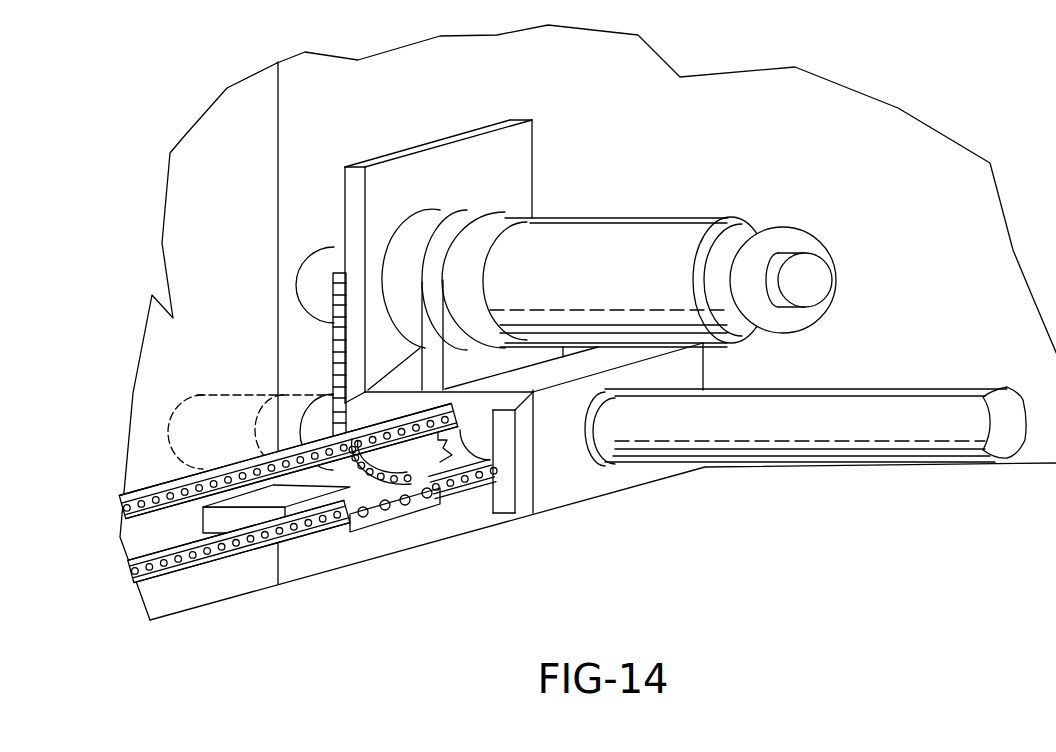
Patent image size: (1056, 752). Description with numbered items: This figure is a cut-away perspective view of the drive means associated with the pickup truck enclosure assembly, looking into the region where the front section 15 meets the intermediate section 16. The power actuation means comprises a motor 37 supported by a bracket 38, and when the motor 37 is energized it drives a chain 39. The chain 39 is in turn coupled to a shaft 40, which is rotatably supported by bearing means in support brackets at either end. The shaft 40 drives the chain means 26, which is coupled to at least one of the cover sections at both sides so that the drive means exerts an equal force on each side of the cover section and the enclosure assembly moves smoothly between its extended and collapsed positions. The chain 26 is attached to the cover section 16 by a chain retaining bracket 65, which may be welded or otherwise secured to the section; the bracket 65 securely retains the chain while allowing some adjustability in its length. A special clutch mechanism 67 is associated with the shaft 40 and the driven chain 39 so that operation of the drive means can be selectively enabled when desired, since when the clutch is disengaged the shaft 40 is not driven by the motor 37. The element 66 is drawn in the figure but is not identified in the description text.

The front section 15 is at (800, 167).
The intermediate section 16 is at (208, 243).
The chain means 26 is at (153, 488).
The motor 37 is at (618, 240).
The bracket 38 is at (424, 146).
The chain 39 is at (343, 272).
The shaft 40 is at (857, 450).
The chain retaining bracket 65 is at (377, 517).
The tube end cap 66 is at (613, 467).
The clutch mechanism 67 is at (207, 422).